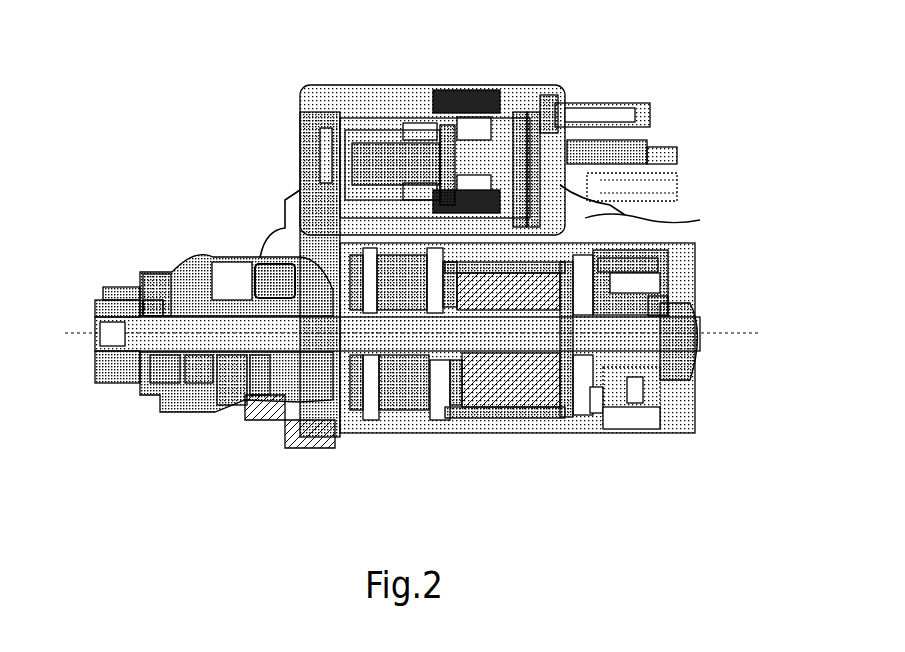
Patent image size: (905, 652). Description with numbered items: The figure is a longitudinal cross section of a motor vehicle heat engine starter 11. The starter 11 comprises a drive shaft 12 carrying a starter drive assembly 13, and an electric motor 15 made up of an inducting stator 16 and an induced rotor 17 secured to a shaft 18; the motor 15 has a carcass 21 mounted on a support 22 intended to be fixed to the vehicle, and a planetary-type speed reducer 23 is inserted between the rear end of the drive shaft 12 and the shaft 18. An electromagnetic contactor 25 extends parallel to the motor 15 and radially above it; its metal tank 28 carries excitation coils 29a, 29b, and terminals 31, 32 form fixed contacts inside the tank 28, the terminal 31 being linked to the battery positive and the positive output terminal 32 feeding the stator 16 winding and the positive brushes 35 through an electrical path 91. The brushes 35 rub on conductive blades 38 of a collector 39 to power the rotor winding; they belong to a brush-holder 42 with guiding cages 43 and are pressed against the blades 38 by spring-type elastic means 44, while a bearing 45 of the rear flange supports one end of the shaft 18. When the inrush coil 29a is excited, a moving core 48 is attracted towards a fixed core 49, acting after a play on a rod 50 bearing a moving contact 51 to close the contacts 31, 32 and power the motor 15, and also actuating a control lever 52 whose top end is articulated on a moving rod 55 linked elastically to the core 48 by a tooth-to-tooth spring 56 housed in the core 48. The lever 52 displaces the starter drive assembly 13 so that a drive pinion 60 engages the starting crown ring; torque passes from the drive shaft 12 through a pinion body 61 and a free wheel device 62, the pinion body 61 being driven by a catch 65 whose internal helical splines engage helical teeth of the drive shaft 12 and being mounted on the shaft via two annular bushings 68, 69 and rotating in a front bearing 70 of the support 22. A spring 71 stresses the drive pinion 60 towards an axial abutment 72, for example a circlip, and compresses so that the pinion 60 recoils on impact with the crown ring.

The starter 11 is at (258, 70).
The drive shaft 12 is at (318, 430).
The starter drive assembly 13 is at (216, 262).
The electric motor 15 is at (435, 405).
The inducting stator 16 is at (470, 407).
The induced rotor 17 is at (515, 419).
The shaft 18 is at (565, 415).
The carcass 21 is at (572, 433).
The support 22 is at (300, 210).
The speed reducer 23 is at (395, 410).
The electromagnetic contactor 25 is at (390, 143).
The metal tank 28 is at (470, 90).
The inrush coil 29a is at (535, 112).
The excitation coil 29b is at (520, 112).
The terminal 31 is at (610, 105).
The positive output terminal 32 is at (650, 208).
The brushes 35 is at (645, 288).
The conductive blades 38 is at (650, 385).
The collector 39 is at (665, 300).
The brush-holder 42 is at (660, 262).
The cages 43 is at (650, 272).
The elastic means 44 is at (660, 405).
The bearing 45 is at (702, 310).
The moving core 48 is at (360, 130).
The fixed core 49 is at (558, 110).
The rod 50 is at (640, 150).
The moving contact 51 is at (660, 185).
The control lever 52 is at (300, 210).
The moving rod 55 is at (318, 125).
The tooth-to-tooth spring 56 is at (446, 125).
The drive pinion 60 is at (103, 292).
The pinion body 61 is at (232, 405).
The free wheel device 62 is at (268, 420).
The catch 65 is at (262, 264).
The annular bushing 68 is at (165, 383).
The annular bushing 69 is at (200, 383).
The front bearing 70 is at (160, 272).
The spring 71 is at (150, 270).
The axial abutment 72 is at (100, 360).
The electrical path 91 is at (672, 215).